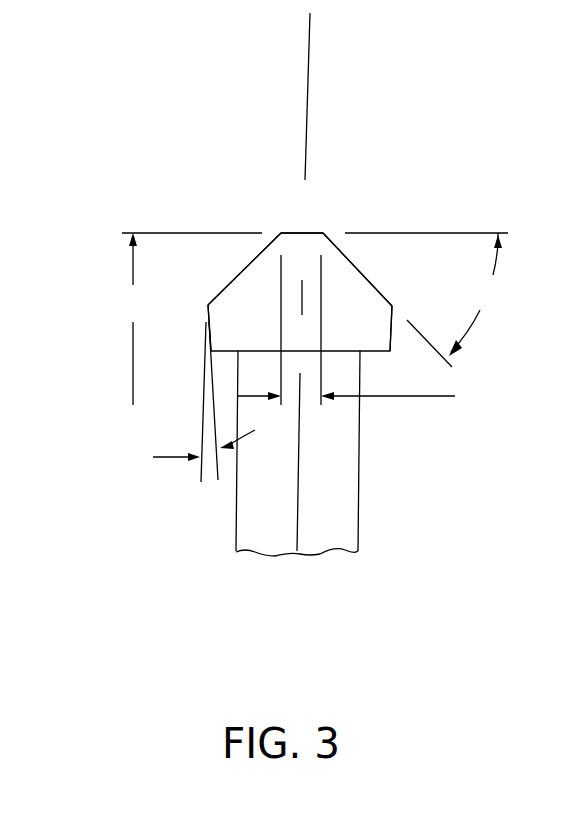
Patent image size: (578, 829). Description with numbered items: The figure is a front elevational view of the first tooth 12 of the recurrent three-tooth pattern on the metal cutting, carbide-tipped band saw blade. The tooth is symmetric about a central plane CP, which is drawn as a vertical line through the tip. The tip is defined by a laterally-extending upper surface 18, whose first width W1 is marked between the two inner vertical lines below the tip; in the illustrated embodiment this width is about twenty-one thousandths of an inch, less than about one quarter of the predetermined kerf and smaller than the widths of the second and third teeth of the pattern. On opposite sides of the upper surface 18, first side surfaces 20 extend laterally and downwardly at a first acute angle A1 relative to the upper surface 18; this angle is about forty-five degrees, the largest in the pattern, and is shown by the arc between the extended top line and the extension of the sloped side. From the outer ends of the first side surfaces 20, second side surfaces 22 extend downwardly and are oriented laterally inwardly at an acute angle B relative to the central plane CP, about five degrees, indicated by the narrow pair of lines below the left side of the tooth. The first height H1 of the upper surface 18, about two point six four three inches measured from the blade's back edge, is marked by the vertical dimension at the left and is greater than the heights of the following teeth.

The first tooth 12 is at (330, 197).
The upper surface 18 is at (305, 233).
The first side surfaces 20 is at (235, 280).
The second side surfaces 22 is at (206, 312).
The central plane CP is at (308, 66).
The first height H1 is at (135, 319).
The first acute angle A1 is at (454, 301).
The first width W1 is at (370, 396).
The acute angle B is at (188, 402).